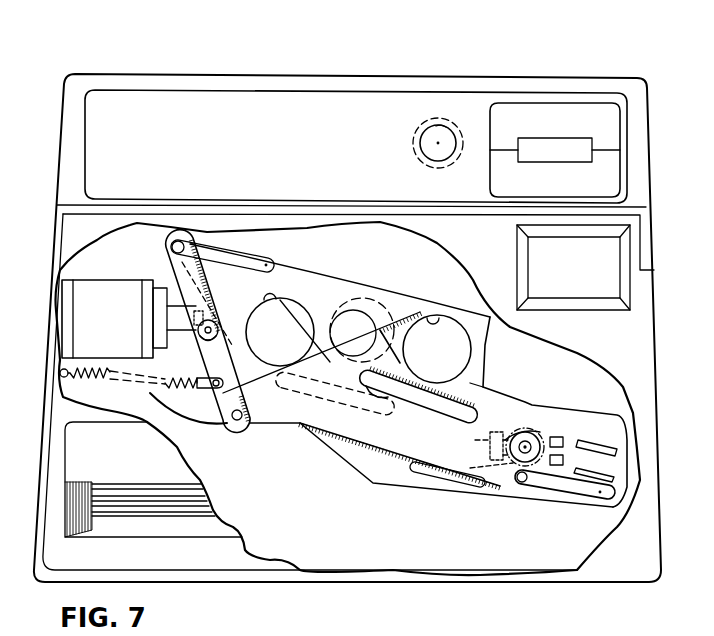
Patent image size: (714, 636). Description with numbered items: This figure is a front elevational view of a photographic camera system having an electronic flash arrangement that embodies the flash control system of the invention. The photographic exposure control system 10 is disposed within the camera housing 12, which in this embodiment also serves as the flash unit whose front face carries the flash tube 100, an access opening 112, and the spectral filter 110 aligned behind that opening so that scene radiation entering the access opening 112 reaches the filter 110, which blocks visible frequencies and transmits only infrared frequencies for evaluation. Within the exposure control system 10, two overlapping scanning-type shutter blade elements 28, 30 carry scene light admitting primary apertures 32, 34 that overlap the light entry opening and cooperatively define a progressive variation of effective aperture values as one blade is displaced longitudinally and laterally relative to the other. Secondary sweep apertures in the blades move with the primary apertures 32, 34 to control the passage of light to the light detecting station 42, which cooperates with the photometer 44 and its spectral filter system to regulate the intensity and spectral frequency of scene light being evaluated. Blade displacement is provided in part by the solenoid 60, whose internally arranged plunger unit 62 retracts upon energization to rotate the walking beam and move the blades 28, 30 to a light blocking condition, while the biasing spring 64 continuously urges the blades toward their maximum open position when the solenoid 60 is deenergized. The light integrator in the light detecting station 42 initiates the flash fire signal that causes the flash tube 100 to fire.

The photographic exposure control system 10 is at (358, 252).
The camera housing 12 is at (649, 79).
The shutter blade element 28 is at (306, 287).
The shutter blade element 30 is at (478, 348).
The primary aperture 32 is at (263, 299).
The primary aperture 34 is at (433, 315).
The light detecting station 42 is at (527, 426).
The photometer 44 is at (542, 432).
The solenoid 60 is at (100, 285).
The plunger unit 62 is at (187, 326).
The biasing spring 64 is at (90, 378).
The flash tube 100 is at (576, 142).
The spectral filter 110 is at (420, 126).
The access opening 112 is at (448, 128).